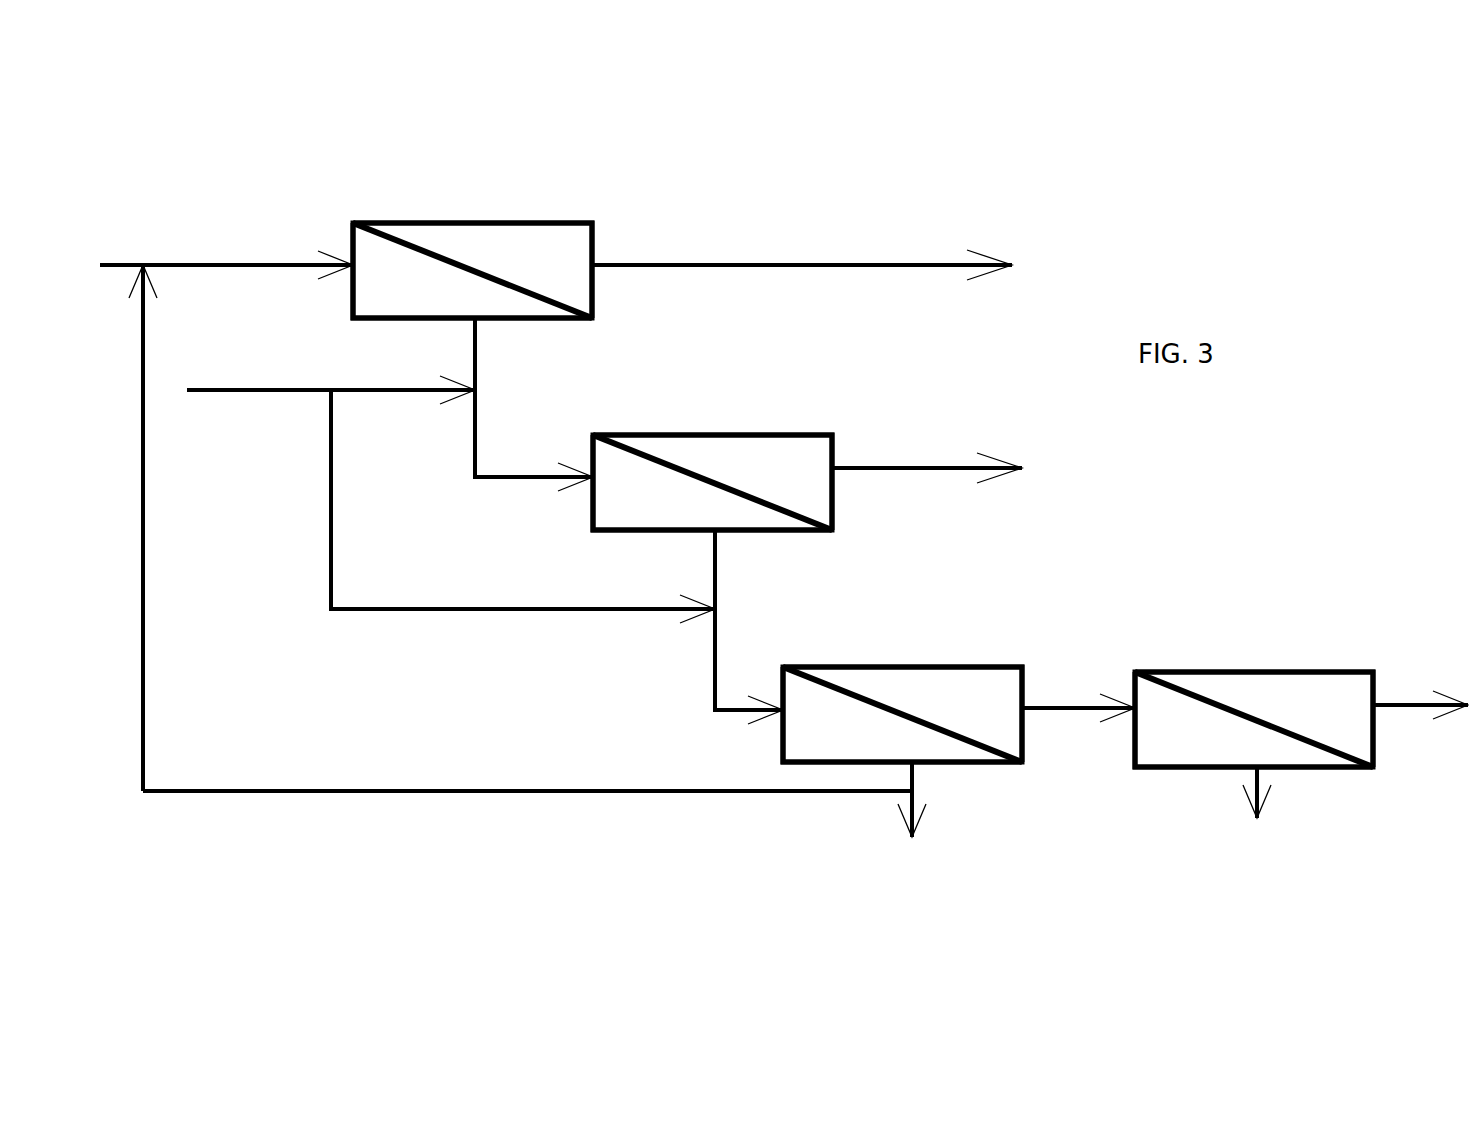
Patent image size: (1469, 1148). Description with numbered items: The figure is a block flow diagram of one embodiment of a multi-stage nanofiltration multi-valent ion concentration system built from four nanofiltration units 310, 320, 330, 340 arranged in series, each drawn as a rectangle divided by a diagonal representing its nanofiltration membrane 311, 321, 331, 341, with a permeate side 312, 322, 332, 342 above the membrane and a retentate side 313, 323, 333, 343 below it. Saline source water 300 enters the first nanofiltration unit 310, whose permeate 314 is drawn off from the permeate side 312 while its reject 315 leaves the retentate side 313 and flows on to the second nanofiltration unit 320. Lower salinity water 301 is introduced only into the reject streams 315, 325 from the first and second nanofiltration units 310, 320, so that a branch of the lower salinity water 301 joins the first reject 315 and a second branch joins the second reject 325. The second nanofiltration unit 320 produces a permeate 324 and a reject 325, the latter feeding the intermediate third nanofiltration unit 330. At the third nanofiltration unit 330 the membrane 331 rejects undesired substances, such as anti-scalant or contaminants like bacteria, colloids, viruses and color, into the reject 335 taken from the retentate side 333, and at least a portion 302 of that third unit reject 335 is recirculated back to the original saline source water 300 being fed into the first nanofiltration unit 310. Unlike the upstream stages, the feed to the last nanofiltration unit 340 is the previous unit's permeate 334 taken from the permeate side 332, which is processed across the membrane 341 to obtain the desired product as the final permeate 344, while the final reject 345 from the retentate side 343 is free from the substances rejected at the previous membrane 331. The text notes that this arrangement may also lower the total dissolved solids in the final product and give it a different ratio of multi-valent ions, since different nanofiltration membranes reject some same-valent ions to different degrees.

The saline source water 300 is at (133, 262).
The lower salinity water 301 is at (263, 388).
The recirculated nanofiltration reject 302 is at (300, 790).
The nanofiltration unit 310 is at (415, 221).
The nanofiltration membrane 311 is at (487, 274).
The nanofiltration unit permeate side 312 is at (497, 245).
The nanofiltration unit retentate side 313 is at (398, 285).
The nanofiltration permeate 314 is at (723, 262).
The nanofiltration reject 315 is at (478, 358).
The nanofiltration unit 320 is at (678, 432).
The nanofiltration membrane 321 is at (740, 488).
The nanofiltration unit permeate side 322 is at (723, 452).
The nanofiltration unit retentate side 323 is at (635, 505).
The nanofiltration permeate 324 is at (900, 462).
The nanofiltration reject 325 is at (718, 570).
The nanofiltration unit 330 is at (850, 663).
The nanofiltration membrane 331 is at (933, 722).
The nanofiltration unit permeate side 332 is at (908, 687).
The nanofiltration unit retentate side 333 is at (818, 730).
The nanofiltration permeate 334 is at (1063, 707).
The nanofiltration reject 335 is at (918, 795).
The nanofiltration unit 340 is at (1192, 670).
The nanofiltration membrane 341 is at (1280, 727).
The nanofiltration unit permeate side 342 is at (1253, 685).
The nanofiltration unit retentate side 343 is at (1163, 732).
The nanofiltration permeate 344 is at (1407, 700).
The nanofiltration reject 345 is at (1262, 778).